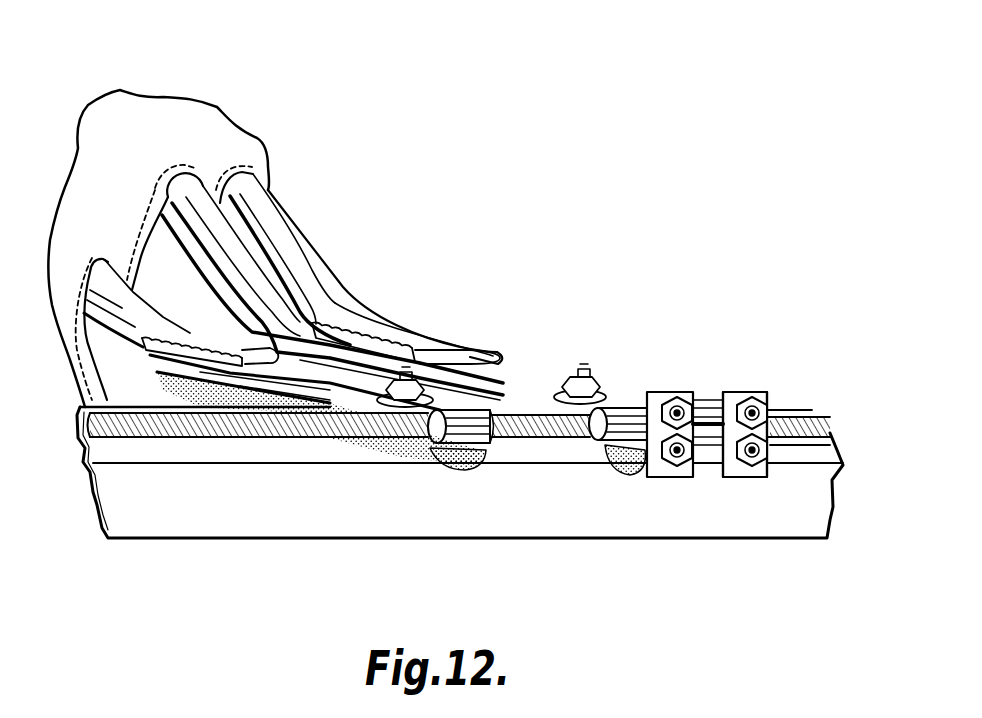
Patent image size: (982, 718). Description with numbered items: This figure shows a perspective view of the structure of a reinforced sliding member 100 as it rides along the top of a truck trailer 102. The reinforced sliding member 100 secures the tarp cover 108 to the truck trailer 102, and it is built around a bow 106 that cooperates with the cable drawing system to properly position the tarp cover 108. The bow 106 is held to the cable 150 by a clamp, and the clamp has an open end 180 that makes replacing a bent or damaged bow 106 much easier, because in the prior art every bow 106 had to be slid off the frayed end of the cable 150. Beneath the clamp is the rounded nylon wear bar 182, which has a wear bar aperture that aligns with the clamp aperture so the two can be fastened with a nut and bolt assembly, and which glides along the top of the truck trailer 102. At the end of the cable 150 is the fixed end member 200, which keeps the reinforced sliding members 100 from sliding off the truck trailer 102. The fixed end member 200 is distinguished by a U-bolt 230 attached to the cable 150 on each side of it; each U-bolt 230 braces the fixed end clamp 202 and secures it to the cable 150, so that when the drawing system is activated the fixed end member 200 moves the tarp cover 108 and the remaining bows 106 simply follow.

The reinforced sliding member 100 is at (262, 300).
The truck trailer 102 is at (300, 513).
The bow 106 is at (178, 192).
The tarp cover 108 is at (200, 140).
The cable 150 is at (780, 420).
The open end 180 is at (455, 427).
The rounded nylon wear bar 182 is at (477, 463).
The fixed end member 200 is at (697, 407).
The fixed end clamp 202 is at (745, 434).
The U-bolt 230 is at (667, 393).